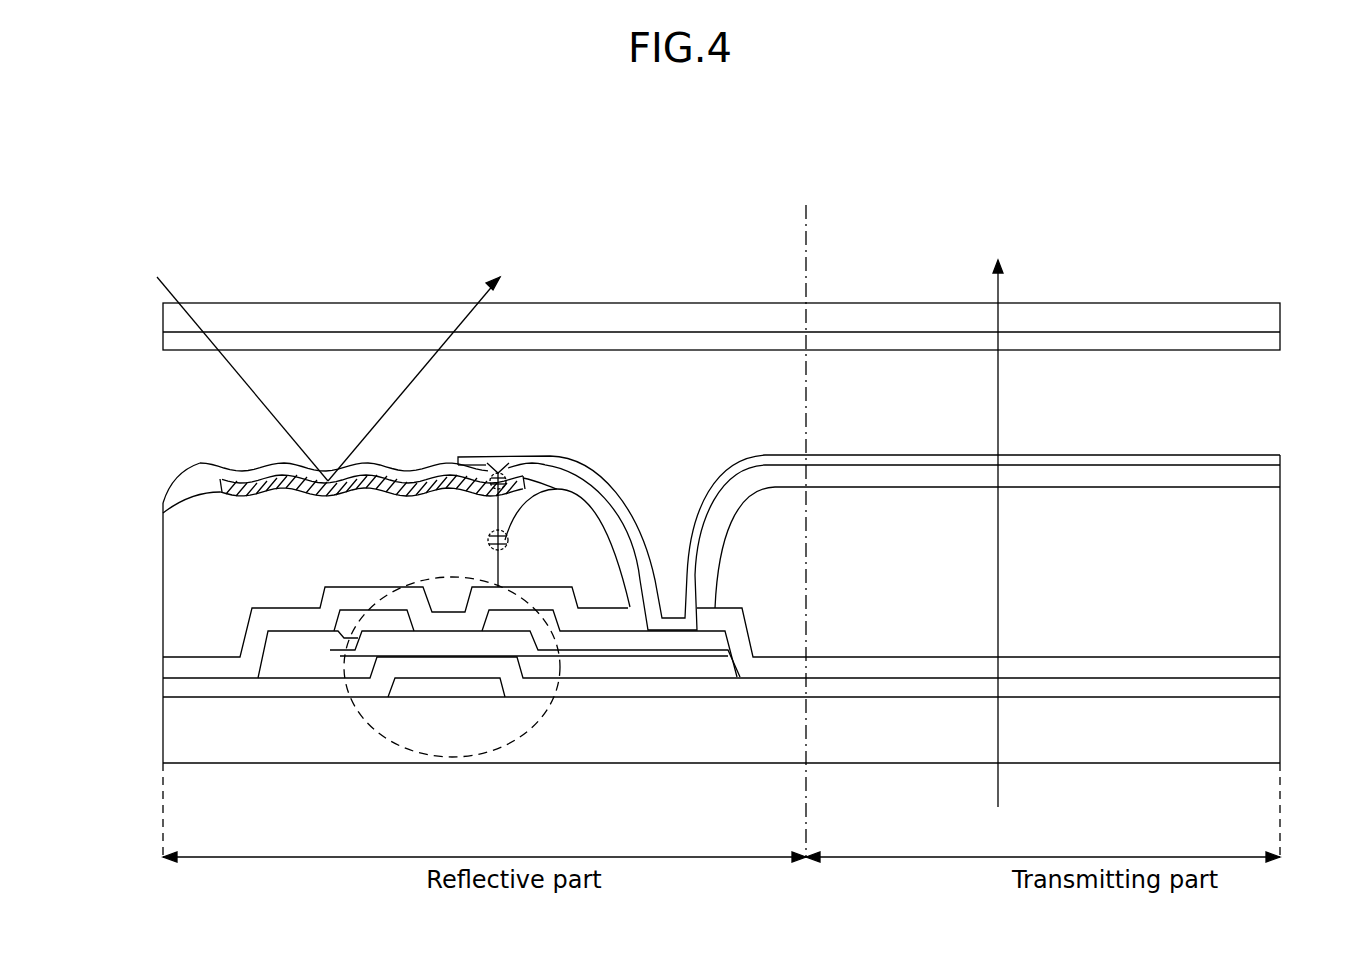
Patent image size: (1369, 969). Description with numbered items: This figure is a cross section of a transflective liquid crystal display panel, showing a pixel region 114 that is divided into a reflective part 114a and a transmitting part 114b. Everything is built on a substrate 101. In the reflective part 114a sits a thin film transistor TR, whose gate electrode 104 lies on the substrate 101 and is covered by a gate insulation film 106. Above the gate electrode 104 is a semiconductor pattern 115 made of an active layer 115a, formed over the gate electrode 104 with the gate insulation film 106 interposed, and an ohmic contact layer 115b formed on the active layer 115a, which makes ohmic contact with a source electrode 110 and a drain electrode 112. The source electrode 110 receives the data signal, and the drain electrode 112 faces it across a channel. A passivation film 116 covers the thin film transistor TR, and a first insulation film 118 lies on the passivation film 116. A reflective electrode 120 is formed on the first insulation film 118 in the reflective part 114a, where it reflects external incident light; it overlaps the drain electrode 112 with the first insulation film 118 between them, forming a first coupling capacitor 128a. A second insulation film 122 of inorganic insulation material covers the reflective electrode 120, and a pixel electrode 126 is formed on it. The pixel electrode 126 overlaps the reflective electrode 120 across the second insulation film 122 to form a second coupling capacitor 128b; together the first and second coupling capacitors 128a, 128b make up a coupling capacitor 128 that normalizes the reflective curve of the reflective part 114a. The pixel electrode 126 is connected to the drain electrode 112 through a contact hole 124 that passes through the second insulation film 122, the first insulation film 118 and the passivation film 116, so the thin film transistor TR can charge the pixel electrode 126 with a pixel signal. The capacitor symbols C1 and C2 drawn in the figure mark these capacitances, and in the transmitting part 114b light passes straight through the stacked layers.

The pixel region 114 is at (721, 229).
The reflective part 114a is at (647, 238).
The transmitting part 114b is at (1094, 238).
The substrate 101 is at (1282, 733).
The gate electrode 104 is at (452, 688).
The gate insulation film 106 is at (1282, 688).
The source electrode 110 is at (385, 617).
The drain electrode 112 is at (510, 615).
The semiconductor pattern 115 is at (655, 820).
The active layer 115a is at (618, 665).
The ohmic contact layer 115b is at (690, 653).
The passivation film 116 is at (1282, 665).
The first insulation film 118 is at (1282, 585).
The reflective electrode 120 is at (236, 482).
The second insulation film 122 is at (1282, 480).
The contact hole 124 is at (672, 568).
The pixel electrode 126 is at (1282, 458).
The coupling capacitor 128 is at (535, 420).
The first coupling capacitor 128a is at (558, 488).
The second coupling capacitor 128b is at (491, 459).
The first capacitor C1 is at (486, 541).
The second capacitor C2 is at (497, 462).
The thin film transistor TR is at (430, 581).